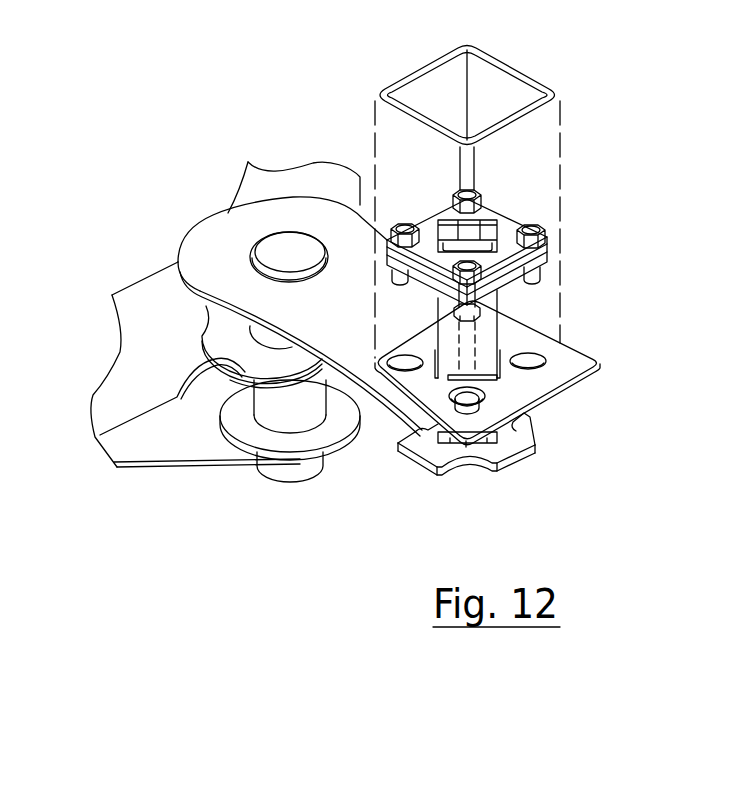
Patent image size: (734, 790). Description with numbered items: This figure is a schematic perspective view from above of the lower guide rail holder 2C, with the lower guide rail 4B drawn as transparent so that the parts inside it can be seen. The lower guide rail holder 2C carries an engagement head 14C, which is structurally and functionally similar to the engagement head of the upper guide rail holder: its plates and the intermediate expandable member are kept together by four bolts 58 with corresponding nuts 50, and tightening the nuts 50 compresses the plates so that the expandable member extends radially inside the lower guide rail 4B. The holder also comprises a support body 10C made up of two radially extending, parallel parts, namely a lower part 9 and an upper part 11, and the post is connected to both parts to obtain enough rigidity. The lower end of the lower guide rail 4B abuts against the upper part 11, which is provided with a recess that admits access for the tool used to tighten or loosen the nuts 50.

The lower guide rail 4B is at (552, 121).
The bolts 58 is at (527, 226).
The nuts 50 is at (537, 277).
The engagement head 14C is at (574, 255).
The support body 10C is at (243, 247).
The lower guide rail holder 2C is at (588, 398).
The upper part of the support body 11 is at (587, 363).
The lower part of the support body 9 is at (502, 457).